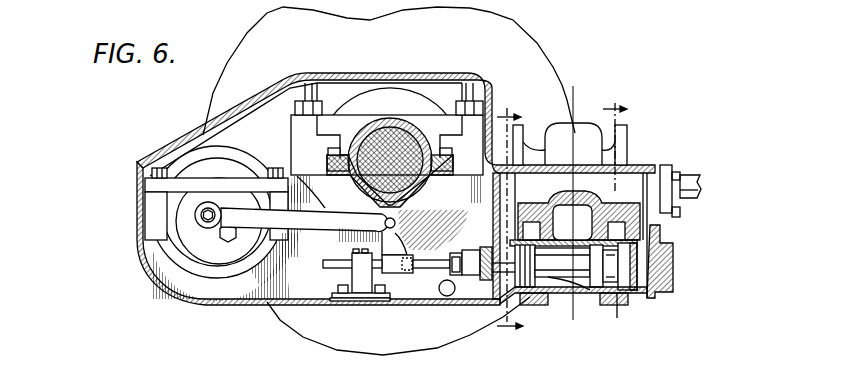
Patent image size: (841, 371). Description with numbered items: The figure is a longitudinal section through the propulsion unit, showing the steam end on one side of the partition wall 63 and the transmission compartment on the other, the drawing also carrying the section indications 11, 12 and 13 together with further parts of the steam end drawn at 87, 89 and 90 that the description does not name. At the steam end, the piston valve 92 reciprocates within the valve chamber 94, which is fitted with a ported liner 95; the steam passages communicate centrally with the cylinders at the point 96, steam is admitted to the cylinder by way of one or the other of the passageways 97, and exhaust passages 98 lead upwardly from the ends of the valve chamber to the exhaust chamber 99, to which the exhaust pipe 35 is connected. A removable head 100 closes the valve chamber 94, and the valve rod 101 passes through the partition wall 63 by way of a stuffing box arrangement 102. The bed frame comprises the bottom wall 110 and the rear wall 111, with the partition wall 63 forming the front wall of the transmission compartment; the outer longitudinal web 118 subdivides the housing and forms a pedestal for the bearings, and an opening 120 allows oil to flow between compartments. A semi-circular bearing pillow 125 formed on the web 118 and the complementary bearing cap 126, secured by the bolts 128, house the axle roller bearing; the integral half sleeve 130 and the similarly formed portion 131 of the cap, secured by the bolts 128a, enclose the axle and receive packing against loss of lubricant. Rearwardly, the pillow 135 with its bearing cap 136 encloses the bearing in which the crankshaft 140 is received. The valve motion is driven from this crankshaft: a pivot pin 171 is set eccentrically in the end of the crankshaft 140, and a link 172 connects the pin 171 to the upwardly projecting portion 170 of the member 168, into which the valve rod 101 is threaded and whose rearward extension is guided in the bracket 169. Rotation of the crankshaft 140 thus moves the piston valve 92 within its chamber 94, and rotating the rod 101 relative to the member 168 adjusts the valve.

The section line 11- 11 is at (574, 204).
The section line 12- 12 is at (620, 212).
The section line 13- 13 is at (510, 218).
The exhaust pipe 35 is at (686, 177).
The partition wall 63 is at (505, 223).
The bearing cap 87 is at (578, 213).
The left post 89 is at (528, 152).
The right post 90 is at (623, 142).
The piston valve 92 is at (558, 297).
The valve chamber 94 is at (588, 290).
The ported liner 95 is at (640, 248).
The steam passage communication 96 is at (565, 247).
The passageway 97 is at (619, 230).
The exhaust passage 98 is at (500, 203).
The exhaust chamber 99 is at (552, 180).
The removable head 100 is at (670, 277).
The valve rod 101 is at (485, 282).
The stuffing box arrangement 102 is at (470, 278).
The bottom wall 110 is at (307, 305).
The rear wall 111 is at (137, 211).
The outer longitudinal web 118 is at (266, 293).
The opening 120 is at (419, 299).
The bearing pillow 125 is at (342, 203).
The bearing cap 126 is at (362, 92).
The bolt 128 is at (304, 100).
The bolt 128a is at (333, 150).
The half sleeve 130 is at (413, 200).
The half sleeve portion of bearing cap 131 is at (393, 125).
The pillow 135 is at (180, 257).
The bearing cap 136 is at (197, 170).
The crankshaft 140 is at (210, 241).
The member 168 is at (394, 266).
The bracket 169 is at (352, 279).
The upwardly projecting portion 170 is at (398, 237).
The pivot pin 171 is at (209, 207).
The link 172 is at (304, 235).